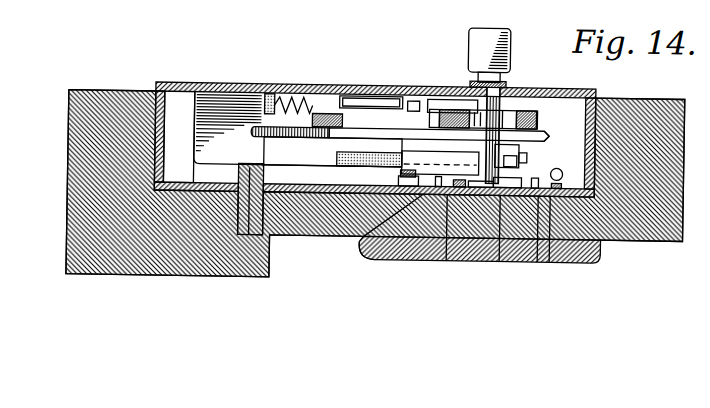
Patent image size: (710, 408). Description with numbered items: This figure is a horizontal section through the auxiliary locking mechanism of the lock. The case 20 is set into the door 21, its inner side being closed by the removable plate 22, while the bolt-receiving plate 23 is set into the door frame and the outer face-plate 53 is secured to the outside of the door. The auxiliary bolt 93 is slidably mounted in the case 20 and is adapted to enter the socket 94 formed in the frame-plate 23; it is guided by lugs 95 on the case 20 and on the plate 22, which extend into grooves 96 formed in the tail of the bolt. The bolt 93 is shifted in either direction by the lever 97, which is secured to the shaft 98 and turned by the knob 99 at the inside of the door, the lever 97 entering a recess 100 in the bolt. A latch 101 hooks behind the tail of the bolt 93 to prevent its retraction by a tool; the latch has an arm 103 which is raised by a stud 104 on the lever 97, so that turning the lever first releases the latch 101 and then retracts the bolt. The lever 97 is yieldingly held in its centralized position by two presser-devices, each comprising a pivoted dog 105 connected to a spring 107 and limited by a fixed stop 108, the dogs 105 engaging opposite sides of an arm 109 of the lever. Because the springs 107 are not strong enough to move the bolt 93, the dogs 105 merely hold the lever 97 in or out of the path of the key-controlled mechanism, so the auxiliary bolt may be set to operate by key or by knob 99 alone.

The case 20 is at (612, 91).
The door 21 is at (653, 217).
The removable plate 22 is at (368, 83).
The bolt-receiving plate 23 is at (156, 143).
The outer face-plate 53 is at (406, 261).
The auxiliary bolt 93 is at (223, 99).
The socket 94 is at (175, 103).
The lugs 95 is at (430, 96).
The grooves 96 is at (350, 94).
The lever 97 is at (523, 106).
The shaft 98 is at (520, 152).
The knob 99 is at (506, 33).
The recess 100 is at (442, 98).
The latch 101 is at (548, 128).
The latch arm 103 is at (387, 124).
The stud 104 is at (492, 143).
The dogs 105 is at (446, 260).
The springs 107 is at (400, 172).
The fixed stops 108 is at (366, 234).
The arm 109 is at (506, 257).